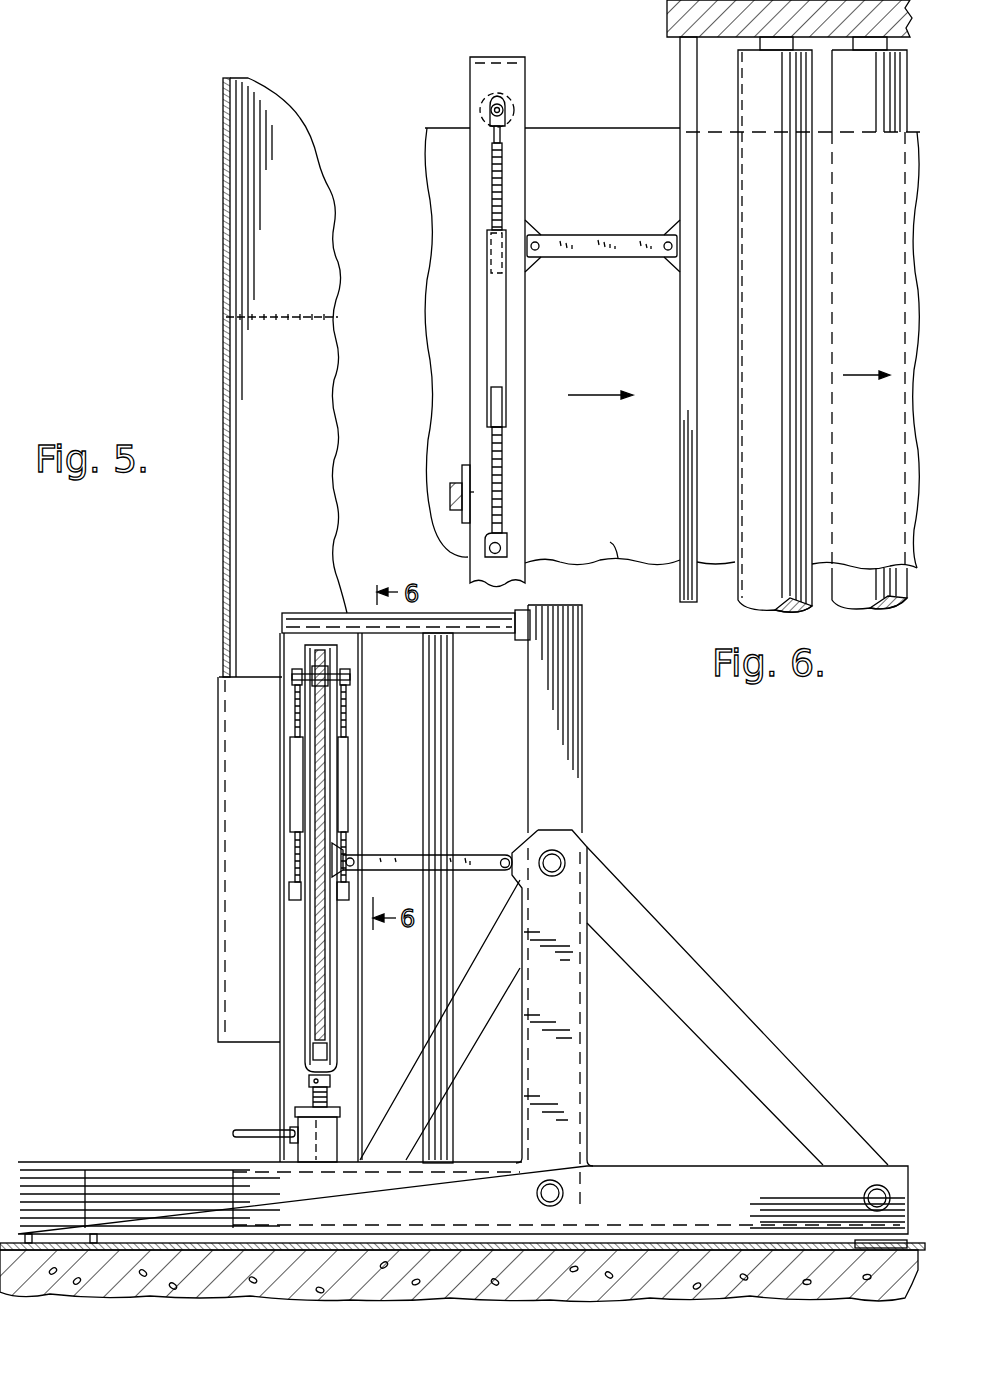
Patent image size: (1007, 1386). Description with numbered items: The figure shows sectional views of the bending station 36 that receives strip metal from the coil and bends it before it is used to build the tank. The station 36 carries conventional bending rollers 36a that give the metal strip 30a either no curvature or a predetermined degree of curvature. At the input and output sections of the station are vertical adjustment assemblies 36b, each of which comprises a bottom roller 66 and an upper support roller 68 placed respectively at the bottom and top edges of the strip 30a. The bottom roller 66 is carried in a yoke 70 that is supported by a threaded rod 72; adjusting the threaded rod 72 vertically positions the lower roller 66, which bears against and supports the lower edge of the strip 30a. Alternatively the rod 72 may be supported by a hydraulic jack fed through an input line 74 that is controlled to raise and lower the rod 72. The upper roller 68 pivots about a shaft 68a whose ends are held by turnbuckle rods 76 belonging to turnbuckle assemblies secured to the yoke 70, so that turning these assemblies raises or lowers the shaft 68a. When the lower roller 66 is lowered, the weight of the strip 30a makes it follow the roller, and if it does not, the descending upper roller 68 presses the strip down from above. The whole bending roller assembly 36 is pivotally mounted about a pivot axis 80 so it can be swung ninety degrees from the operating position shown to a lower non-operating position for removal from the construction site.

In FIG. 6, the metal strip 30a is at (617, 540).
In FIG. 5, the metal strip 30a is at (218, 985).
In FIG. 6, the bending station 36 is at (660, 52).
In FIG. 5, the bending station 36 is at (256, 876).
In FIG. 6, the bending rollers 36a is at (750, 102).
In FIG. 6, the vertical adjustment assemblies 36b is at (530, 352).
In FIG. 5, the vertical adjustment assemblies 36b is at (277, 783).
In FIG. 5, the bottom roller 66 is at (322, 1050).
In FIG. 6, the upper support roller 68 is at (528, 104).
In FIG. 5, the upper support roller 68 is at (325, 674).
In FIG. 6, the upper roller support shaft 68a is at (492, 110).
In FIG. 5, the upper roller support shaft 68a is at (292, 677).
In FIG. 5, the yoke 70 is at (303, 1010).
In FIG. 5, the threaded rod 72 is at (327, 1096).
In FIG. 5, the input line 74 is at (236, 1133).
In FIG. 6, the turnbuckle rods 76 is at (497, 188).
In FIG. 5, the turnbuckle rods 76 is at (296, 707).
In FIG. 5, the pivot axis 80 is at (560, 1185).